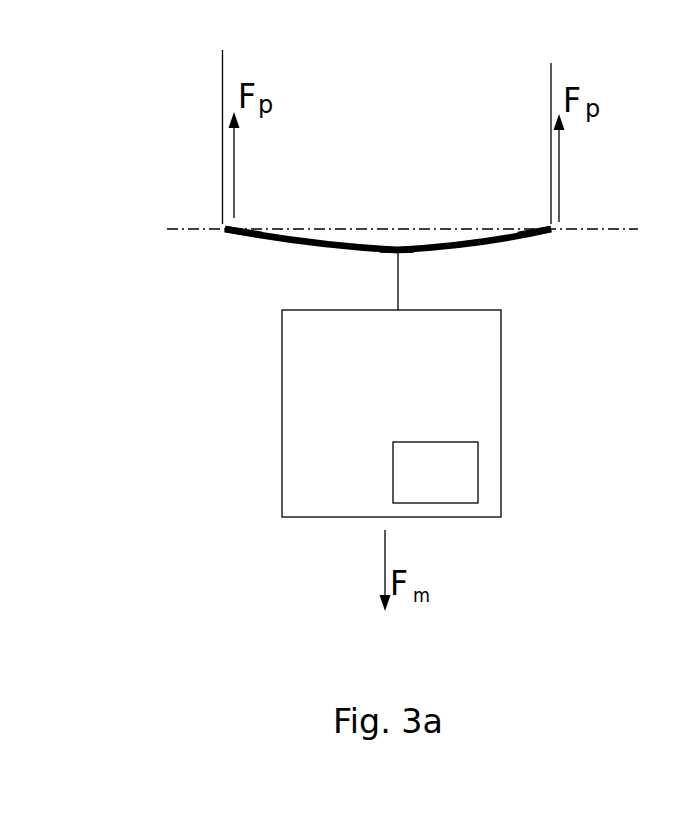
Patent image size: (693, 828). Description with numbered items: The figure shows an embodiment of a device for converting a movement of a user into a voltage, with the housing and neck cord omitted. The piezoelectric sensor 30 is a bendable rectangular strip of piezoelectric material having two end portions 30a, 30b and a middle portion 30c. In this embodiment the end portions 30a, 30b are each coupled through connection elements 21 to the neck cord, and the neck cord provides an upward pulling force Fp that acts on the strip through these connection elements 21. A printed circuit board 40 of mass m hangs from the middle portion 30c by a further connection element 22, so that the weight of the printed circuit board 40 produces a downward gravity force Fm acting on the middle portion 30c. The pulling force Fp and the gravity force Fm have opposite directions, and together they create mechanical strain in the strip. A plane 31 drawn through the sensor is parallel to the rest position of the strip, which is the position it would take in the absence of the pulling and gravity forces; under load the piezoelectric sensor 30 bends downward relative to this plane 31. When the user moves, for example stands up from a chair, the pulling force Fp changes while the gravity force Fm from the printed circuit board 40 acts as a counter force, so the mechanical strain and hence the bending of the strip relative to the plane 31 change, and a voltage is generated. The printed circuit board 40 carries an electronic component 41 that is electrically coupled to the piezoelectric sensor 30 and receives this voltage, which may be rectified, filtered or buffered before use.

The connection elements 21 is at (222, 62).
The further connection element 22 is at (393, 272).
The piezoelectric sensor 30 is at (477, 252).
The end portion 30a is at (225, 240).
The end portion 30b is at (558, 238).
The middle portion 30c is at (395, 248).
The plane 31 is at (617, 233).
The printed circuit board 40 is at (490, 437).
The electronic component 41 is at (447, 491).